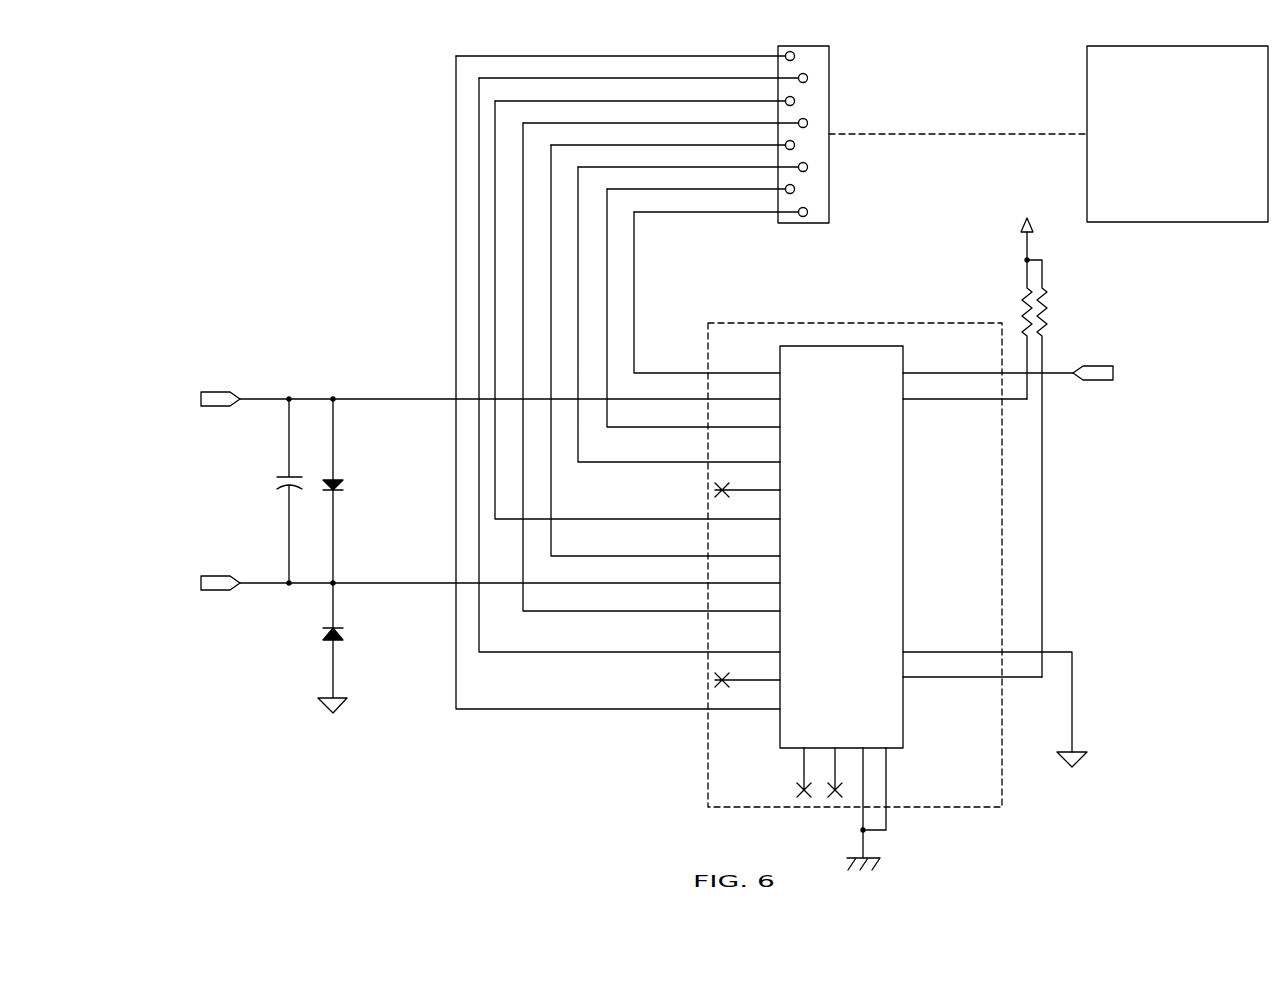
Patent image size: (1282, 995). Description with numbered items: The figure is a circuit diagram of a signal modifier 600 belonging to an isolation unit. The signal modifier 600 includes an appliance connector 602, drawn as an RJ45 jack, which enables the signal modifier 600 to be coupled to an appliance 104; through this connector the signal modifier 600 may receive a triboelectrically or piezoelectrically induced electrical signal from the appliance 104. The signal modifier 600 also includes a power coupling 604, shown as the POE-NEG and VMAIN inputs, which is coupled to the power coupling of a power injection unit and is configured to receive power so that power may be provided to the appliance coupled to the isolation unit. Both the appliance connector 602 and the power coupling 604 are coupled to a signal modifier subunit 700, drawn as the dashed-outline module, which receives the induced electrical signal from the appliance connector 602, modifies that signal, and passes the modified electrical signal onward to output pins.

The appliance 104 is at (1197, 222).
The signal modifier 600 is at (453, 569).
The appliance connector 602 is at (792, 223).
The power coupling 604 is at (217, 392).
The signal modifier subunit 700 is at (1002, 783).